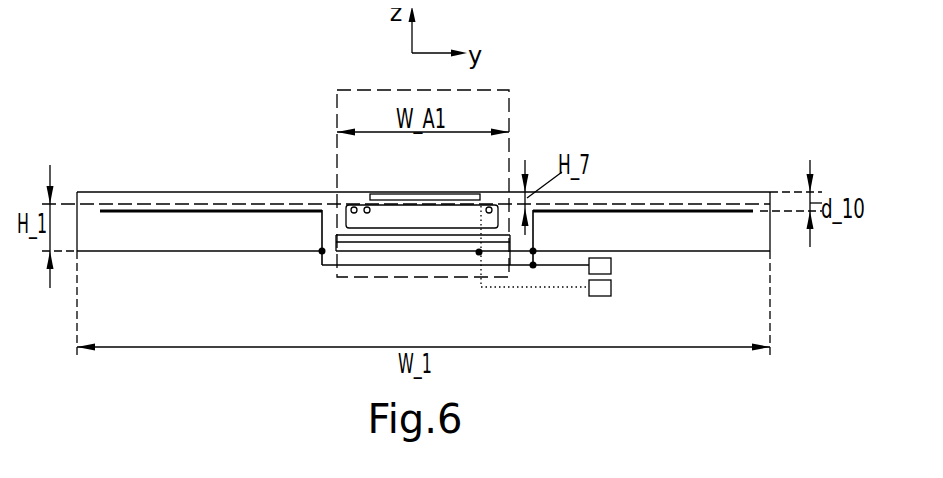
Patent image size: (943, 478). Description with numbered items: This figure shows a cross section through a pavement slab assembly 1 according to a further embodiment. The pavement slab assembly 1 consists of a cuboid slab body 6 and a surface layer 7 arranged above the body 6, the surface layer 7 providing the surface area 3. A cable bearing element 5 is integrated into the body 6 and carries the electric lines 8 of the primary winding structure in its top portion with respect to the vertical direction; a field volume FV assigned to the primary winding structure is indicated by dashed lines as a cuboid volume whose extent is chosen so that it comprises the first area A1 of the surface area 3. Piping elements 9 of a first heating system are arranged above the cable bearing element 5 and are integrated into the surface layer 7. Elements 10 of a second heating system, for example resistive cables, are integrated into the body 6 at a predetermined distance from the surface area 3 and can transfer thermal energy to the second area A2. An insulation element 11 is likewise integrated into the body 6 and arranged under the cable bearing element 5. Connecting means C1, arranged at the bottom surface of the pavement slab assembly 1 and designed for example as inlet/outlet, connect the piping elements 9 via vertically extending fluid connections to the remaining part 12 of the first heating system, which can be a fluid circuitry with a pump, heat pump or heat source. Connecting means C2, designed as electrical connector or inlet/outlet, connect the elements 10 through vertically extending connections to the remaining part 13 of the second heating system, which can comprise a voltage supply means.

The pavement slab assembly 1 is at (756, 198).
The surface area 3 is at (147, 191).
The cable bearing element 5 is at (425, 213).
The slab body 6 is at (675, 232).
The surface layer 7 is at (730, 198).
The electric lines 8 is at (492, 207).
The piping elements 9 is at (370, 193).
The elements of the second heating system 10 is at (212, 210).
The insulation element 11 is at (423, 240).
The remaining part of the first heating system 12 is at (611, 290).
The remaining part of the second heating system 13 is at (611, 265).
The first area A1 is at (463, 194).
The second area A2 is at (632, 191).
The connecting means of the piping elements C1 is at (477, 255).
The connecting means of the elements of the second heating system C2 is at (322, 251).
The field volume FV is at (508, 89).